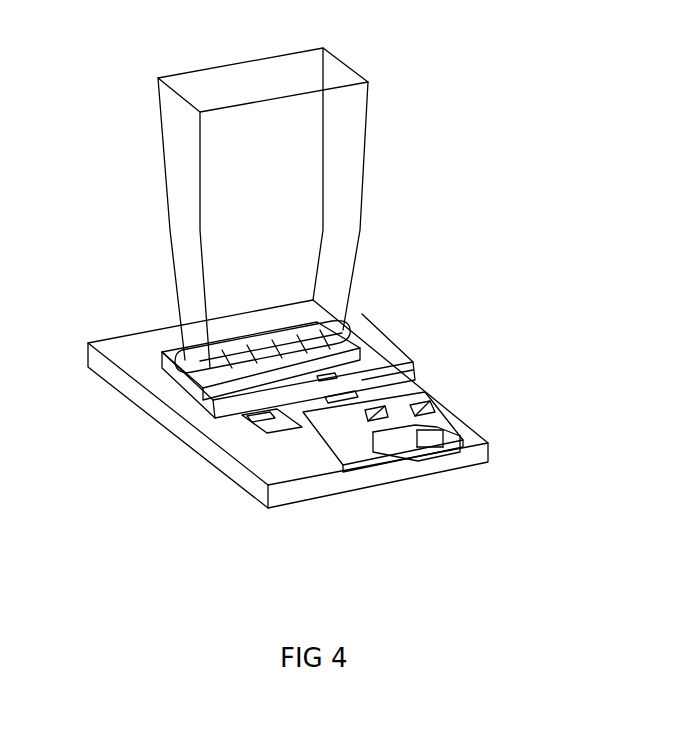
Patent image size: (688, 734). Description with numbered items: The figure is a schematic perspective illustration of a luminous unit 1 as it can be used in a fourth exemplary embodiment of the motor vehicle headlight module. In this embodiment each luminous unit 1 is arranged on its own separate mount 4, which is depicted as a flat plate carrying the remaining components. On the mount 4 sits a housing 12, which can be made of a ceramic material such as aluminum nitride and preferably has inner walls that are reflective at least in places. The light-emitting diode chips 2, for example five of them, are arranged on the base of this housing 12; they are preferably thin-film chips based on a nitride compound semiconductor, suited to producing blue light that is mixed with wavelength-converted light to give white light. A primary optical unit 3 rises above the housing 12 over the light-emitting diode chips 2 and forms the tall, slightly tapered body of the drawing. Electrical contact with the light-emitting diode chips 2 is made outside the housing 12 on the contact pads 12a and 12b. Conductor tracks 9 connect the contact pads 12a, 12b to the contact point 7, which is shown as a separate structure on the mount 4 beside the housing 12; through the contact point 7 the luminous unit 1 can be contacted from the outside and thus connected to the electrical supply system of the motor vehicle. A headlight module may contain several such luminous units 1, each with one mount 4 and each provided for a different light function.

The luminous unit 1 is at (428, 112).
The light-emitting diode chips 2 is at (247, 357).
The primary optical unit 3 is at (345, 173).
The mount 4 is at (300, 495).
The contact point 7 is at (395, 440).
The conductor tracks 9 is at (400, 380).
The housing 12 is at (327, 340).
The contact pad 12a is at (248, 417).
The contact pad 12b is at (347, 395).